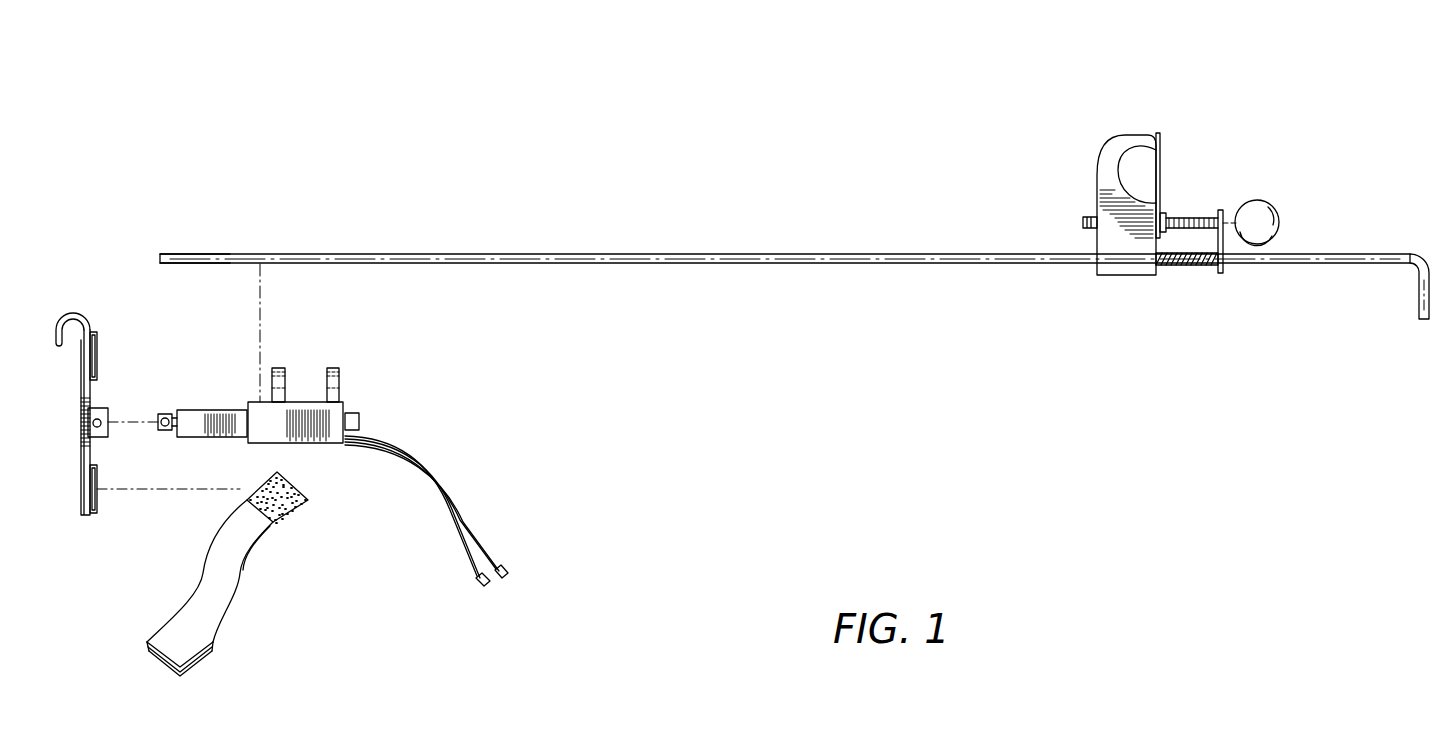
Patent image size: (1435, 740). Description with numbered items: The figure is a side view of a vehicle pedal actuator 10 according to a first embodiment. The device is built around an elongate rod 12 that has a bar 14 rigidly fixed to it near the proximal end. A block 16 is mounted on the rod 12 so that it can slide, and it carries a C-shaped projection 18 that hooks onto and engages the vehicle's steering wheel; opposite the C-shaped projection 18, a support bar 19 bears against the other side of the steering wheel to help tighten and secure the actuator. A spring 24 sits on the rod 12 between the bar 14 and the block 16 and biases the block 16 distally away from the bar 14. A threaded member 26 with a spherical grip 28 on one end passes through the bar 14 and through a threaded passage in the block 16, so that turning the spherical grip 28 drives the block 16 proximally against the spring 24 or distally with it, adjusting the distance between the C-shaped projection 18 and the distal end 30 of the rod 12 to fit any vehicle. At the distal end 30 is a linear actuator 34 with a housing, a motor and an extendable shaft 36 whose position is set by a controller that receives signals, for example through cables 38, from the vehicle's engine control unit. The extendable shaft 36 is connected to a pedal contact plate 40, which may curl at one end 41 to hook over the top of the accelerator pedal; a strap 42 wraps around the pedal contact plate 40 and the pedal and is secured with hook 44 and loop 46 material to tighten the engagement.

The vehicle pedal actuator 10 is at (983, 146).
The elongate rod 12 is at (745, 254).
The bar 14 is at (1221, 273).
The block 16 is at (1127, 275).
The C-shaped projection 18 is at (1125, 135).
The support bar 19 is at (1160, 155).
The spring 24 is at (1185, 264).
The threaded member 26 is at (1182, 217).
The spherical grip 28 is at (1258, 217).
The distal end 30 is at (225, 254).
The linear actuator 34 is at (343, 403).
The extendable shaft 36 is at (197, 417).
The cables 38 is at (467, 537).
The pedal contact plate 40 is at (88, 387).
The curled end 41 is at (75, 313).
The strap 42 is at (220, 585).
The hook material 44 is at (283, 500).
The loop material 46 is at (203, 657).